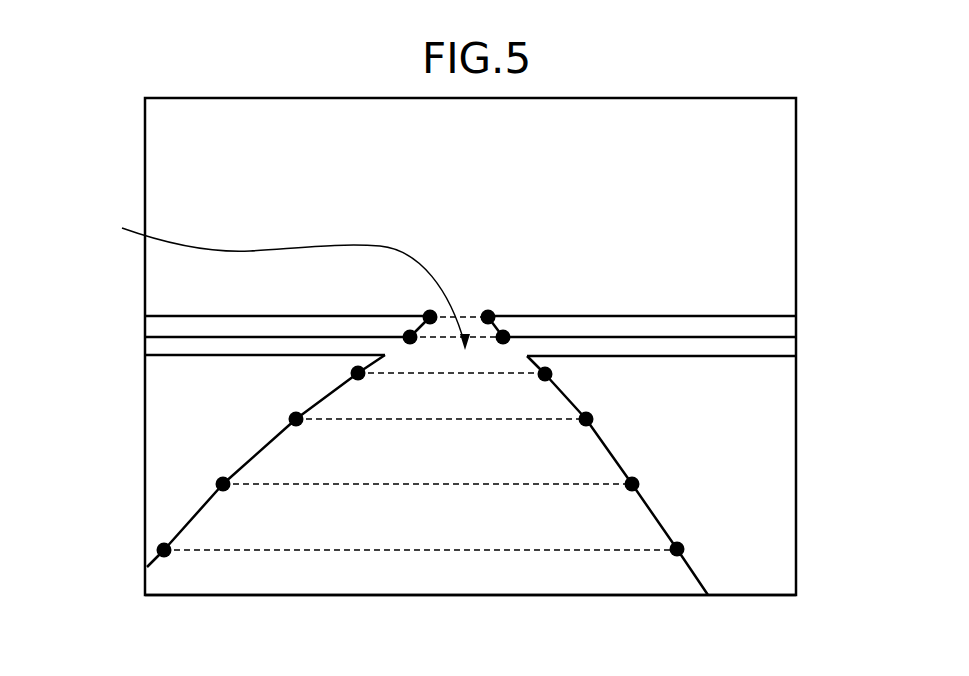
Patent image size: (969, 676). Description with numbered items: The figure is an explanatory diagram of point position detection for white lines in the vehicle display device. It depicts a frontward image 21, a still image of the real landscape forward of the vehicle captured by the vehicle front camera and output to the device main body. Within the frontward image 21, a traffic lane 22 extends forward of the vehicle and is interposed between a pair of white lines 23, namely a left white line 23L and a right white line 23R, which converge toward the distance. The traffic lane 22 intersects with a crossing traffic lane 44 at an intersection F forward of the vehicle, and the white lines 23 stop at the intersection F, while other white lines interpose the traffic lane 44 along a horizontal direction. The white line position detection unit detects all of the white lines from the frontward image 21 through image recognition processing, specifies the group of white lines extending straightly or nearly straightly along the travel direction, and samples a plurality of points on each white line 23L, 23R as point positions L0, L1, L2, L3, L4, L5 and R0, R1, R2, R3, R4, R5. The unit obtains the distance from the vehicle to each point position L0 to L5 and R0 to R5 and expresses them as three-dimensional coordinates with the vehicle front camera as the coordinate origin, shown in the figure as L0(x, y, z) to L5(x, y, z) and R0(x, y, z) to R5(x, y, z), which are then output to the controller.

The frontward image 21 is at (797, 147).
The traffic lane 22 is at (443, 584).
The traffic lane 44 is at (797, 349).
The white lines 23 is at (476, 475).
The white line 23L is at (203, 506).
The white line 23R is at (698, 573).
The intersection F is at (287, 284).
The point position L0 is at (164, 550).
The point position L1 is at (223, 484).
The point position L2 is at (296, 419).
The point position L3 is at (358, 373).
The point position L4 is at (410, 336).
The point position L5 is at (430, 316).
The point position R0 is at (677, 549).
The point position R1 is at (632, 484).
The point position R2 is at (586, 419).
The point position R3 is at (545, 374).
The point position R4 is at (503, 337).
The point position R5 is at (488, 317).